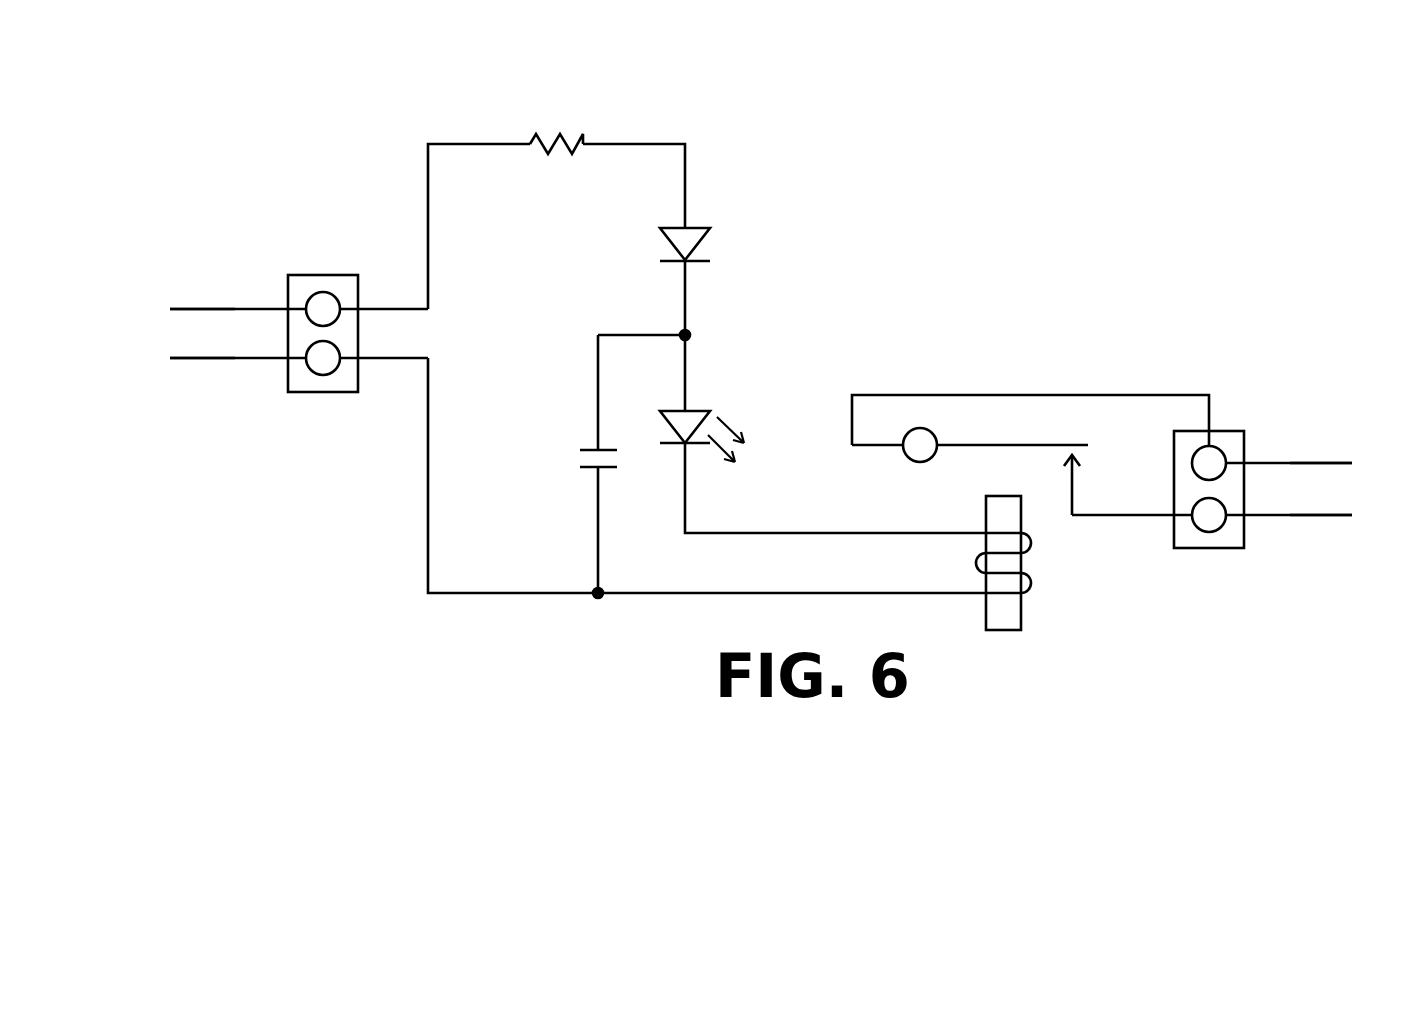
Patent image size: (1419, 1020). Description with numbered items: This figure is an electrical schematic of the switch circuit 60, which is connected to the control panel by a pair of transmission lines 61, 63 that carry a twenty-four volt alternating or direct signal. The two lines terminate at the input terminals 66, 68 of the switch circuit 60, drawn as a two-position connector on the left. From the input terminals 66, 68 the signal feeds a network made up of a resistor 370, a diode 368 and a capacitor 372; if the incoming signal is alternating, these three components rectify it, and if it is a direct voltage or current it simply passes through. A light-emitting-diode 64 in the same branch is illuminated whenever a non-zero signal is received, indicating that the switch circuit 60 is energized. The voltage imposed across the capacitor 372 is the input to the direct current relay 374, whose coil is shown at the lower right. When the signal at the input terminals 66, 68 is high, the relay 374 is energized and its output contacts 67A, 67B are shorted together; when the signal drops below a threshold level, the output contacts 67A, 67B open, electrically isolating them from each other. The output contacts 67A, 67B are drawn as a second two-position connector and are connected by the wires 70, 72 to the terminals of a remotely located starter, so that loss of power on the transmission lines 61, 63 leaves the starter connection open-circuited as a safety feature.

The switch circuit 60 is at (393, 535).
The transmission line 61 is at (195, 308).
The transmission line 63 is at (195, 358).
The light-emitting-diode 64 is at (745, 418).
The input terminal 66 is at (323, 292).
The input terminal 68 is at (323, 375).
The output contact 67A is at (1209, 446).
The output contact 67B is at (1209, 532).
The wire 70 is at (1330, 463).
The wire 72 is at (1330, 515).
The diode 368 is at (727, 245).
The resistor 370 is at (510, 137).
The capacitor 372 is at (583, 430).
The direct current relay 374 is at (1027, 618).